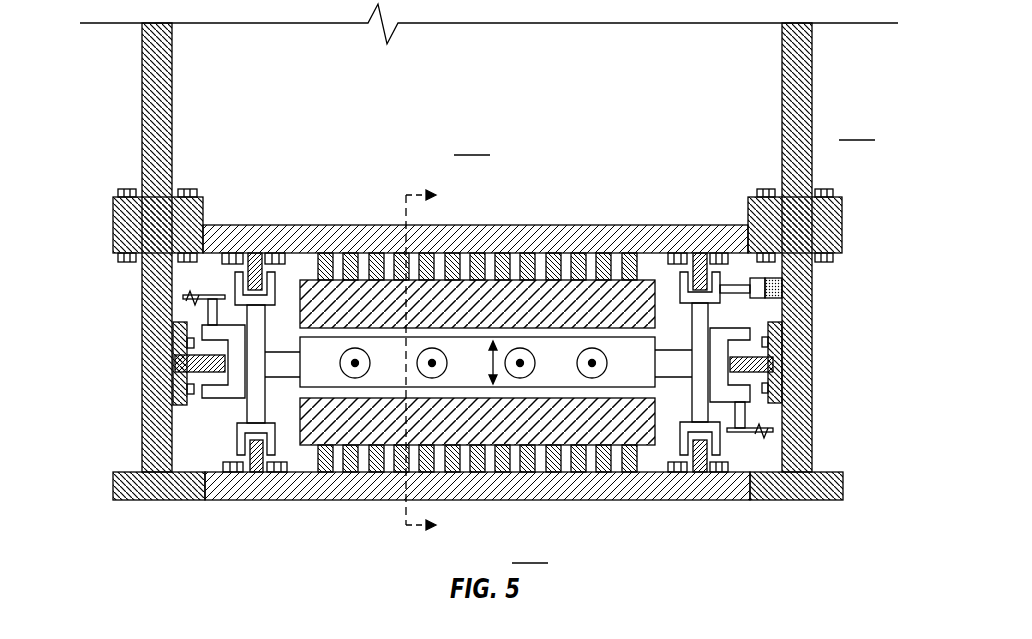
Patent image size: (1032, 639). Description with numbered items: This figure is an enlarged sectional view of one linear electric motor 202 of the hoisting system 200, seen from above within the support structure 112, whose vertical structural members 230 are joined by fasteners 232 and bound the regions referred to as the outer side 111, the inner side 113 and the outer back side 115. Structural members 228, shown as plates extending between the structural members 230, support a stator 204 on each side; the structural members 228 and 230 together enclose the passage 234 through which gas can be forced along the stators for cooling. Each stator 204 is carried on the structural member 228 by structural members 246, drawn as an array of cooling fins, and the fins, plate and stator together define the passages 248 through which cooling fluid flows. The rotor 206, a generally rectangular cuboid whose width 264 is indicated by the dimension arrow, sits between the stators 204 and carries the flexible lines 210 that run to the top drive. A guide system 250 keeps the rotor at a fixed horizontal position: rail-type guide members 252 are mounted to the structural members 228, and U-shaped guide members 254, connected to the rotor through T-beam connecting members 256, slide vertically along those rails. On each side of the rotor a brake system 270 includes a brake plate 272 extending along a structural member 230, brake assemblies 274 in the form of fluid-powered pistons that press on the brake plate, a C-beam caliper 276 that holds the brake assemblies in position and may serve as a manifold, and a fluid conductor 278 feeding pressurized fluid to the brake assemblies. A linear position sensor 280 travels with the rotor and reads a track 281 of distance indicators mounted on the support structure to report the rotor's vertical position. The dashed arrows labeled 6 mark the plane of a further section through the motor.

The hoisting system 200 is at (108, 66).
The support structure 112 is at (141, 110).
The inner side 113 is at (472, 142).
The outer back side 115 is at (857, 127).
The outer side 111 is at (530, 550).
The structural members 230 is at (142, 157).
The fasteners 232 is at (118, 193).
The passage 234 is at (181, 488).
The structural members 228 is at (607, 225).
The guide members 254 is at (236, 255).
The guide members 252 is at (697, 262).
The guide system 250 is at (288, 444).
The linear electric motor 202 is at (308, 275).
The connecting members 256 is at (658, 350).
The stator 204 is at (390, 280).
The passages 248 is at (550, 445).
The rotor 206 is at (530, 337).
The flexible lines 210 is at (592, 348).
The width 264 is at (492, 386).
The structural members 246 is at (330, 262).
The section line 6 is at (434, 360).
The brake system 270 is at (207, 406).
The brake plates 272 is at (178, 363).
The brake assemblies 274 is at (188, 390).
The calipers 276 is at (203, 334).
The fluid conductors 278 is at (185, 297).
The linear position sensor 280 is at (765, 294).
The track 281 is at (782, 288).